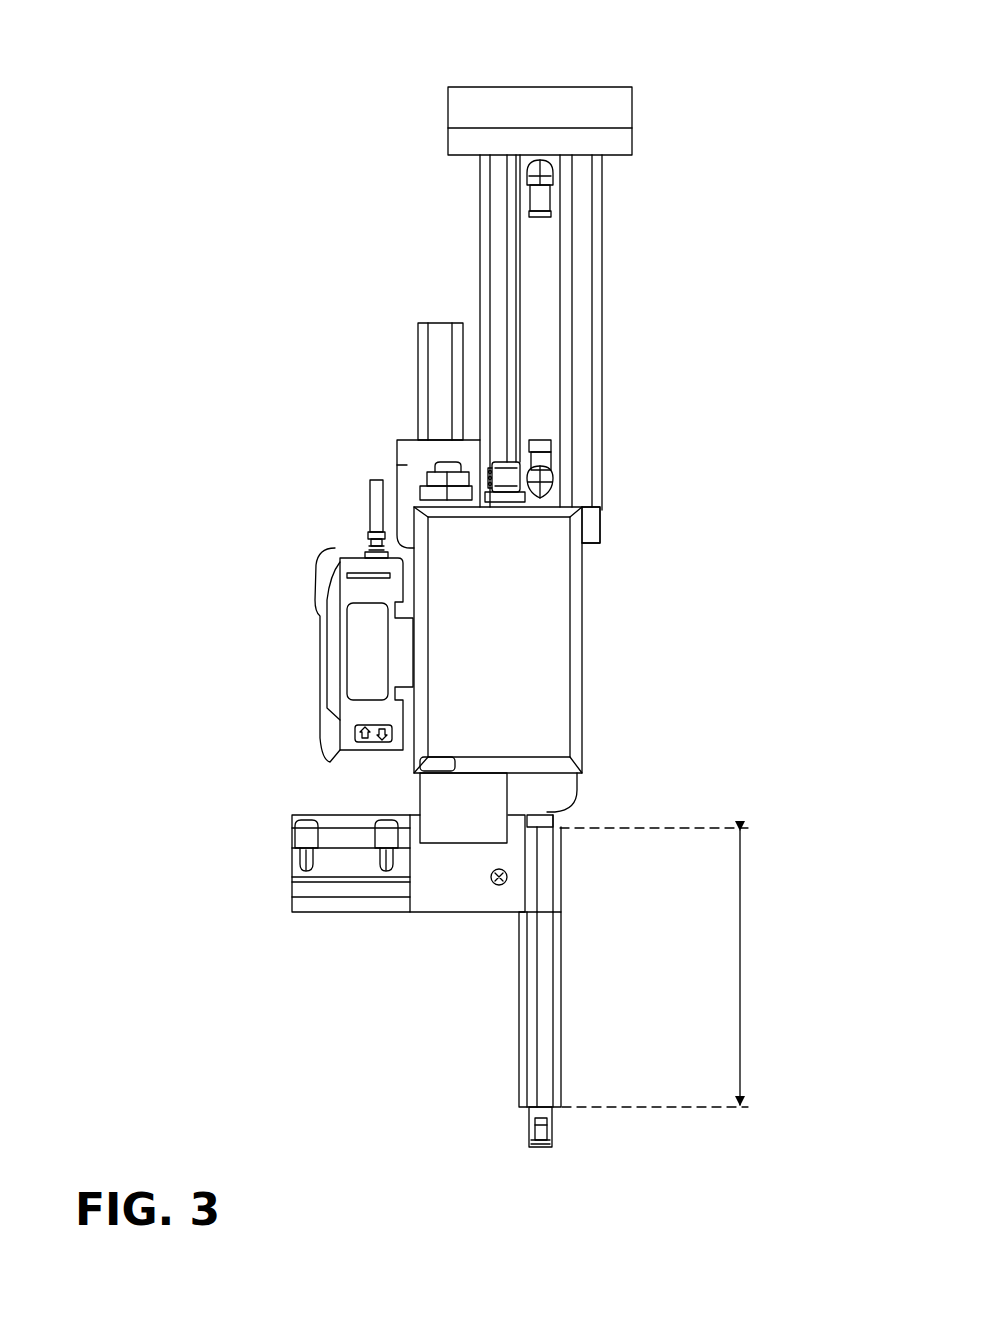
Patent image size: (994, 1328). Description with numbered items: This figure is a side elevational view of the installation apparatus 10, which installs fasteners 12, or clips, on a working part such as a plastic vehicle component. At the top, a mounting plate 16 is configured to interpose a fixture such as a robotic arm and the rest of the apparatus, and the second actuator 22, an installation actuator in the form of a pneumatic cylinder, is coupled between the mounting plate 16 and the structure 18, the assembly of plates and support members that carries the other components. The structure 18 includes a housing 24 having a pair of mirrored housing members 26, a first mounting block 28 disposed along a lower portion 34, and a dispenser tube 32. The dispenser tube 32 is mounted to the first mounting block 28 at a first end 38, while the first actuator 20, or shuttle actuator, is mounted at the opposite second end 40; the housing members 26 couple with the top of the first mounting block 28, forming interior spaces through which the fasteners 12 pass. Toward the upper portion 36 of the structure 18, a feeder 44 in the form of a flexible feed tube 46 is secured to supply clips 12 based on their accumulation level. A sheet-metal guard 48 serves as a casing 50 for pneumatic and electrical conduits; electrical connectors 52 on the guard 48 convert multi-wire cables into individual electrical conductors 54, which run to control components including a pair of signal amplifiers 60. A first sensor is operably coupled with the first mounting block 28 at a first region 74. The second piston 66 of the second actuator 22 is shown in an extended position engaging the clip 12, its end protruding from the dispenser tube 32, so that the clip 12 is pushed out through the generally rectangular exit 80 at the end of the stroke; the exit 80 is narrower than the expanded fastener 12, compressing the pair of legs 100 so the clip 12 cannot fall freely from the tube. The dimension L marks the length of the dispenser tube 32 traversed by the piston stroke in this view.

The installation apparatus 10 is at (703, 143).
The fastener 12 is at (563, 1141).
The mounting plate 16 is at (480, 86).
The structure 18 is at (615, 610).
The first actuator 20 is at (318, 912).
The second actuator 22 is at (480, 195).
The housing 24 is at (397, 430).
The housing members 26 is at (405, 465).
The first mounting block 28 is at (450, 887).
The dispenser tube 32 is at (555, 968).
The lower portion 34 is at (585, 851).
The upper portion 36 is at (366, 495).
The first end 38 is at (537, 886).
The second end 40 is at (415, 905).
The feeder 44 is at (432, 317).
The feed tube 46 is at (420, 343).
The guard 48 is at (548, 660).
The casing 50 is at (590, 565).
The electrical connectors 52 is at (444, 487).
The electrical conductors 54 is at (375, 514).
The signal amplifiers 60 is at (345, 642).
The second piston 66 is at (548, 822).
The first region 74 is at (491, 886).
The exit 80 is at (560, 1108).
The legs 100 is at (540, 1150).
The stroke length L is at (742, 960).